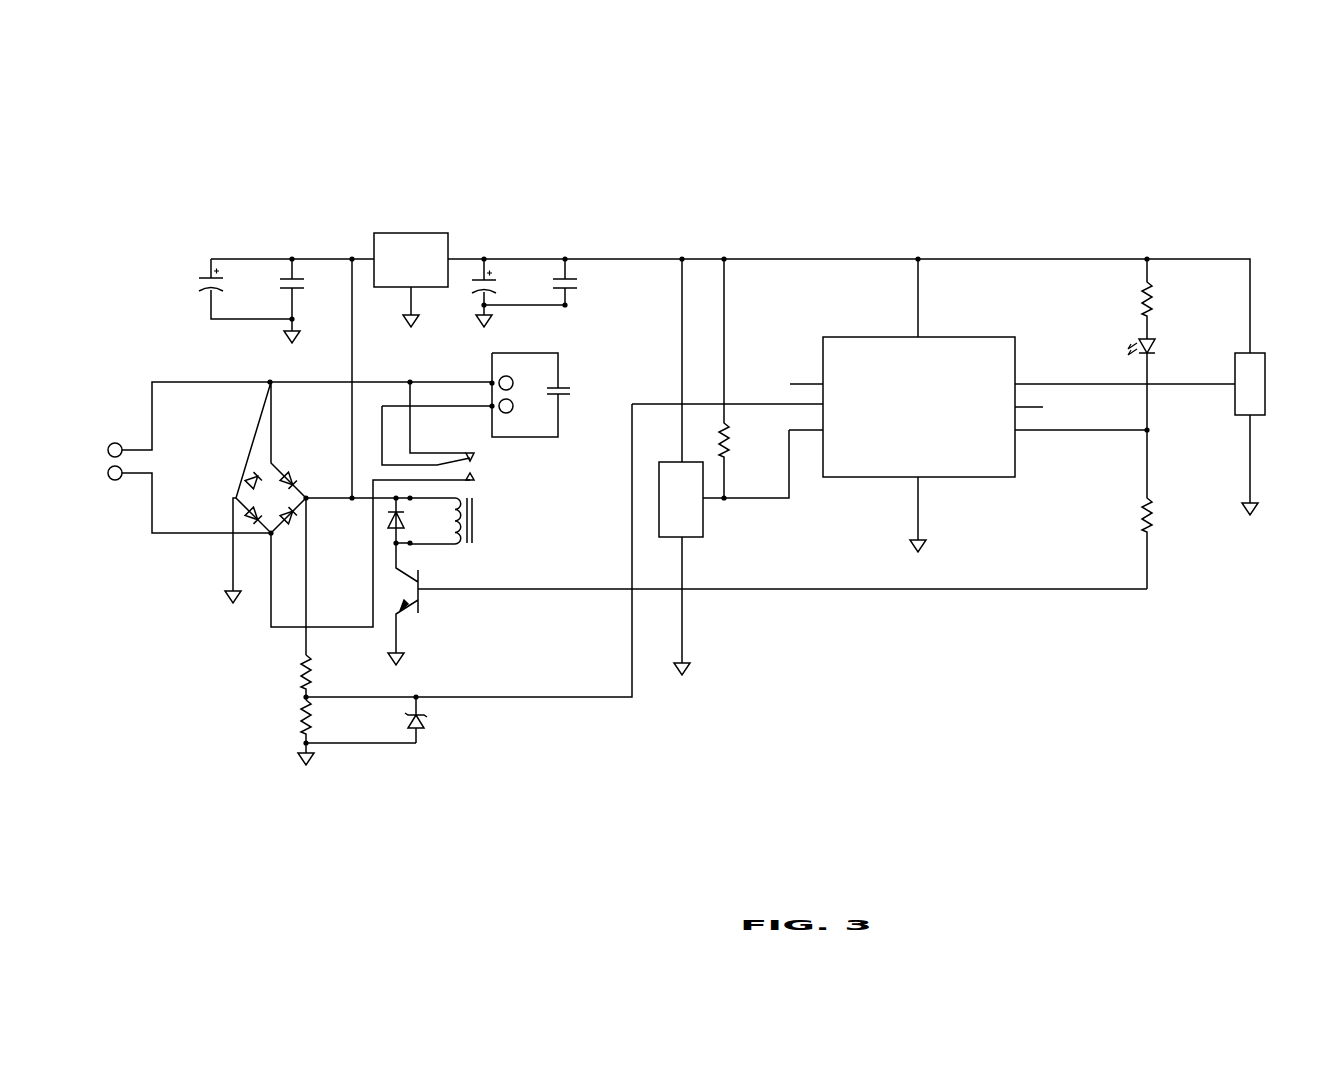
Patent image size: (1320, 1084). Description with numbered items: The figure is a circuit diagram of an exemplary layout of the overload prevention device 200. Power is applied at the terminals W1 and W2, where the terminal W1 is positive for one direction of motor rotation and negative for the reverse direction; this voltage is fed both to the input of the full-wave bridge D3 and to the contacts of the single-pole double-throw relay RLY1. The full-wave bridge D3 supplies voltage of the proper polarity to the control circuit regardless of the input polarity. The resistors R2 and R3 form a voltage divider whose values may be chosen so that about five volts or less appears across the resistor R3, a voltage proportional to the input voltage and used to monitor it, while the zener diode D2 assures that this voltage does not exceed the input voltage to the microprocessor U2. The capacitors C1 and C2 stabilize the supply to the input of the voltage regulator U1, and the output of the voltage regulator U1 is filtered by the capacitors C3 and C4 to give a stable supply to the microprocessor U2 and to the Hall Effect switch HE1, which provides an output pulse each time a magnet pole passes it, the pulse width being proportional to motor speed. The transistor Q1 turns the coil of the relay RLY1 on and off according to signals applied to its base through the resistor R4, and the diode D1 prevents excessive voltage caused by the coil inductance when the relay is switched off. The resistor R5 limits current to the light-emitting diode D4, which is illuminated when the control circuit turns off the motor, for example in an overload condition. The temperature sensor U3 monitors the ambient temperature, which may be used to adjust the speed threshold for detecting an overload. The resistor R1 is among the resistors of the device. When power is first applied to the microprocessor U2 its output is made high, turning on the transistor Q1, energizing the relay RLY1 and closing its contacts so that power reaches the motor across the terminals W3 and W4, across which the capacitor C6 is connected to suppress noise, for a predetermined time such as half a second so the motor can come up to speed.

The overload prevention device 200 is at (248, 93).
The capacitor C1 is at (245, 289).
The capacitor C2 is at (313, 301).
The capacitor C3 is at (518, 293).
The capacitor C4 is at (586, 283).
The capacitor C6 is at (583, 402).
The voltage regulator U1 is at (411, 271).
The microprocessor U2 is at (927, 405).
The temperature sensor U3 is at (1269, 434).
The diode D1 is at (419, 530).
The zener diode D2 is at (440, 720).
The full-wave bridge D3 is at (256, 491).
The light-emitting diode D4 is at (1178, 375).
The resistor R1 is at (743, 380).
The resistor R2 is at (325, 677).
The resistor R3 is at (357, 732).
The resistor R4 is at (1162, 508).
The resistor R5 is at (1162, 299).
The transistor Q1 is at (508, 604).
The relay RLY1 is at (470, 472).
The Hall Effect switch HE1 is at (717, 467).
The terminal W1 is at (300, 419).
The terminal W2 is at (189, 499).
The terminal W3 is at (525, 372).
The terminal W4 is at (470, 395).